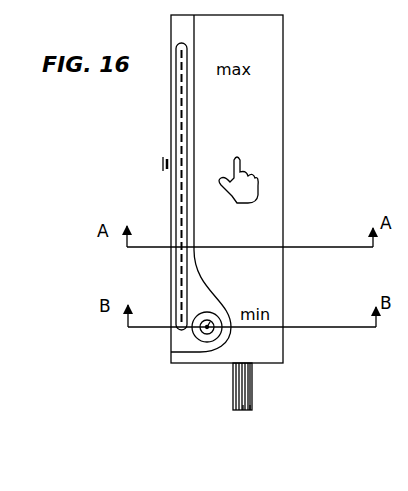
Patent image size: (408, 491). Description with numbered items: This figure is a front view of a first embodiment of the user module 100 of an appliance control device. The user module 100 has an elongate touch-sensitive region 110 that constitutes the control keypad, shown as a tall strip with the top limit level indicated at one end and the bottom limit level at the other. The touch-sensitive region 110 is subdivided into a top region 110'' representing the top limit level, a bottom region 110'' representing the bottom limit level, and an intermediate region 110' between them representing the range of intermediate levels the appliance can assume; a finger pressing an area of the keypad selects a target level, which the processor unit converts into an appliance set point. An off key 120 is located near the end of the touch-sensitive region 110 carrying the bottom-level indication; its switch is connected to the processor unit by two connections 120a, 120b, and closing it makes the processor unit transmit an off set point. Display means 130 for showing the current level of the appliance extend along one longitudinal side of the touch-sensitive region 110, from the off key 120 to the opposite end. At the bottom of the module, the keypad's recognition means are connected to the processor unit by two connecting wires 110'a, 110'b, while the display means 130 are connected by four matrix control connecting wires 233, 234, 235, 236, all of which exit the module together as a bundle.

The user module 100 is at (283, 138).
The touch-sensitive region 110 is at (284, 195).
The intermediate region 110' is at (306, 177).
The top region / bottom region 110'' is at (313, 186).
The off key 120 is at (197, 337).
The connection 120a is at (254, 414).
The connection 120b is at (245, 414).
The display means 130 is at (161, 165).
The matrix control connecting wire 233 is at (232, 413).
The matrix control connecting wire 234 is at (231, 408).
The matrix control connecting wire 235 is at (231, 395).
The matrix control connecting wire 236 is at (231, 384).
The connecting wire 110'a is at (305, 391).
The connecting wire 110'b is at (305, 384).